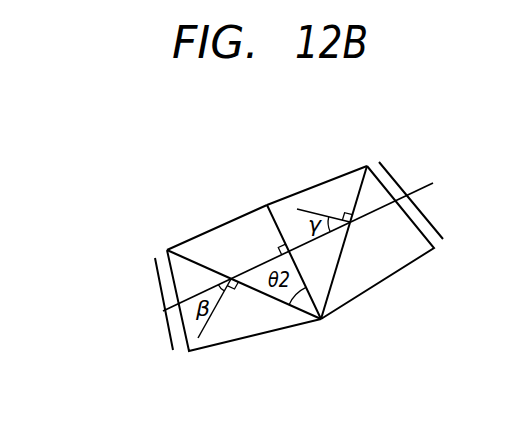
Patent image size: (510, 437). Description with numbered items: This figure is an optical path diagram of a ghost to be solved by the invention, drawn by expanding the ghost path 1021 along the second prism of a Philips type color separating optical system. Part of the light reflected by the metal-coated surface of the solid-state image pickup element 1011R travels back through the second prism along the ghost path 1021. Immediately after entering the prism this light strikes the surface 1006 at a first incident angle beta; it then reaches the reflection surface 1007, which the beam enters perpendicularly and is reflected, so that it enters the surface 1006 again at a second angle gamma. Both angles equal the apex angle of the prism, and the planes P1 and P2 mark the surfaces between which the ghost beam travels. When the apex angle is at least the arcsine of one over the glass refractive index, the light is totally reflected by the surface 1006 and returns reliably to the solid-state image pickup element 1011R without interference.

The surface 1006 is at (197, 263).
The reflection surface 1007 is at (280, 205).
The first reflecting plane P1 is at (230, 275).
The second reflecting plane P2 is at (354, 226).
The ghost path 1021 is at (258, 266).
The solid-state image pickup element 1011R is at (156, 268).